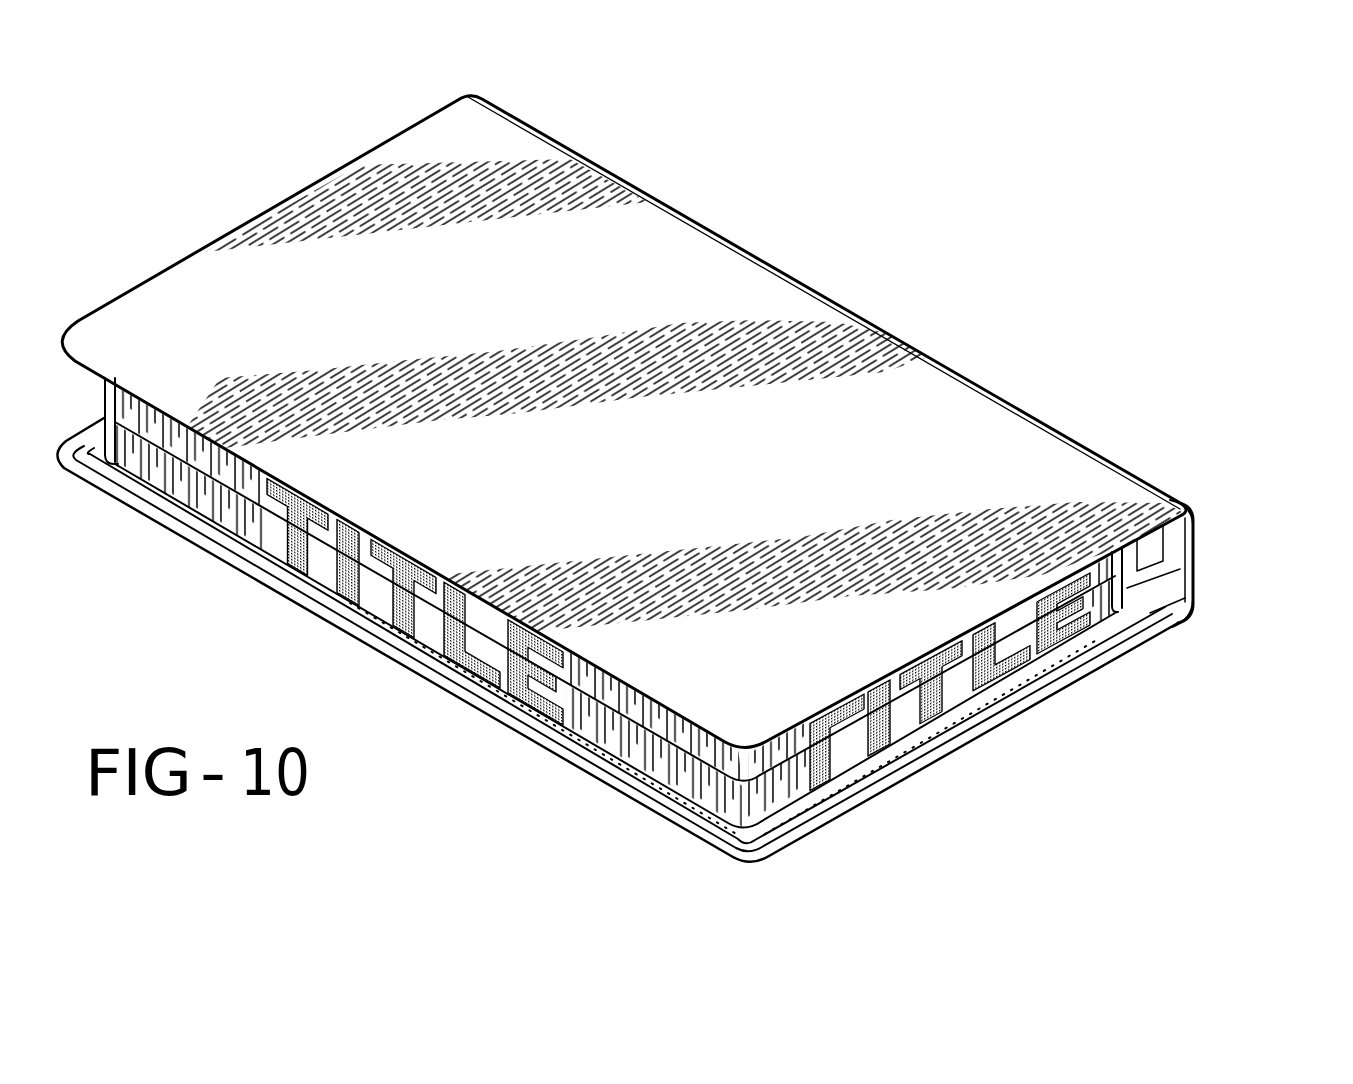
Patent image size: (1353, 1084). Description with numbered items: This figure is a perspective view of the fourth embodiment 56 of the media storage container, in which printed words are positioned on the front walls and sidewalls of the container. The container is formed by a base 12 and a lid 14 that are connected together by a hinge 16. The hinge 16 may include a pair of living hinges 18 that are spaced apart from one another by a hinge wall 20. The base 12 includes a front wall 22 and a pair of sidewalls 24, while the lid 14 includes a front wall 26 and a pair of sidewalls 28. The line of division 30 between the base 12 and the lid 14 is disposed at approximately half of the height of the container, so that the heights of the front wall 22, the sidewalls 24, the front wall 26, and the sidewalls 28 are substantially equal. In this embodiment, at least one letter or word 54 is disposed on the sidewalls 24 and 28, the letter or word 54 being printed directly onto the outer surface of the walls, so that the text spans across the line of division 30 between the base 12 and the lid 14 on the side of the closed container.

The base 12 is at (905, 808).
The lid 14 is at (930, 405).
The hinge 16 is at (1205, 575).
The living hinges 18 is at (1198, 510).
The hinge wall 20 is at (1198, 547).
The front wall 22 is at (595, 740).
The sidewalls 24 is at (792, 783).
The front wall 26 is at (680, 733).
The sidewalls 28 is at (1010, 630).
The line of division 30 is at (233, 495).
The letter or word 54 is at (395, 630).
The fourth embodiment 56 is at (945, 261).